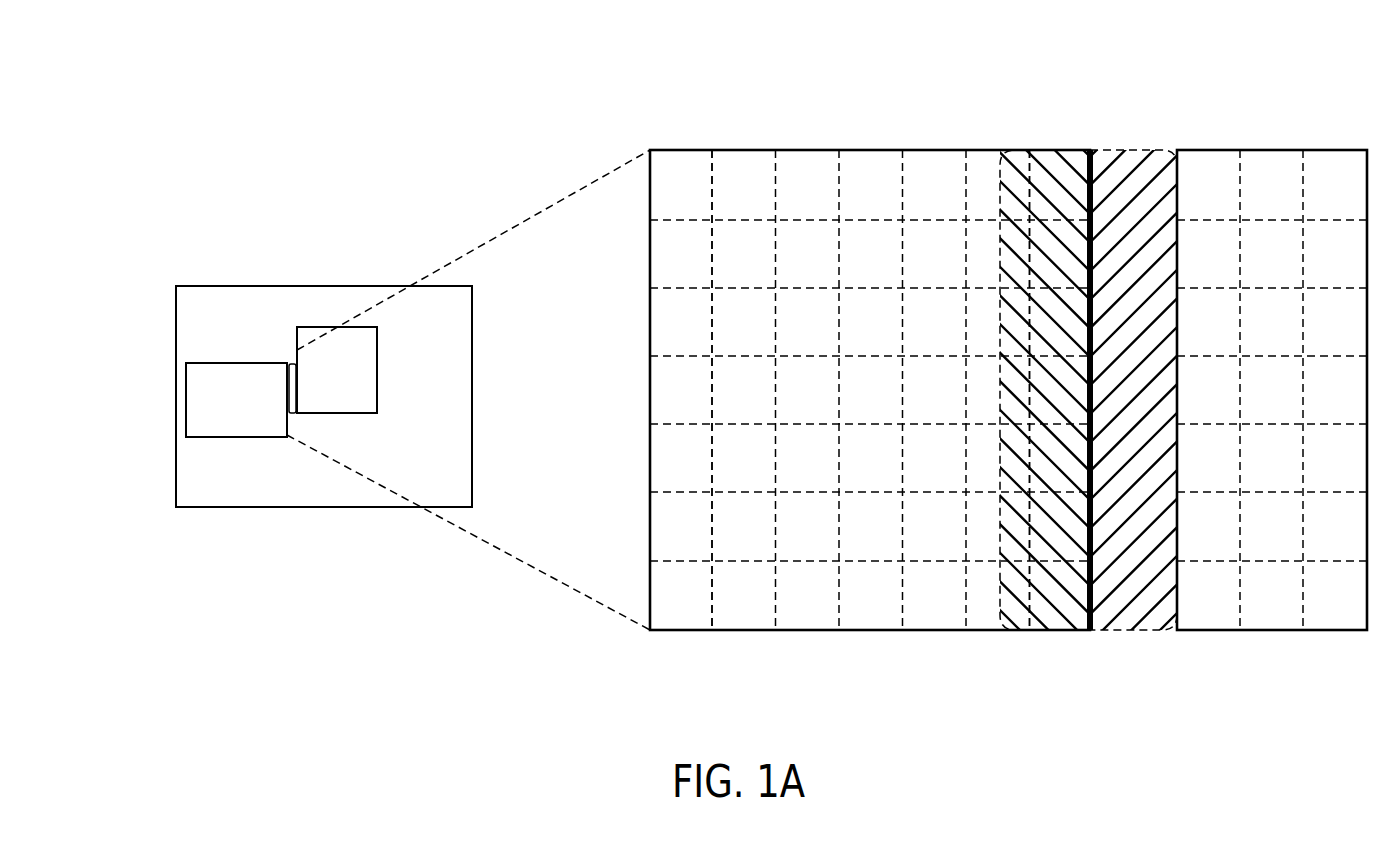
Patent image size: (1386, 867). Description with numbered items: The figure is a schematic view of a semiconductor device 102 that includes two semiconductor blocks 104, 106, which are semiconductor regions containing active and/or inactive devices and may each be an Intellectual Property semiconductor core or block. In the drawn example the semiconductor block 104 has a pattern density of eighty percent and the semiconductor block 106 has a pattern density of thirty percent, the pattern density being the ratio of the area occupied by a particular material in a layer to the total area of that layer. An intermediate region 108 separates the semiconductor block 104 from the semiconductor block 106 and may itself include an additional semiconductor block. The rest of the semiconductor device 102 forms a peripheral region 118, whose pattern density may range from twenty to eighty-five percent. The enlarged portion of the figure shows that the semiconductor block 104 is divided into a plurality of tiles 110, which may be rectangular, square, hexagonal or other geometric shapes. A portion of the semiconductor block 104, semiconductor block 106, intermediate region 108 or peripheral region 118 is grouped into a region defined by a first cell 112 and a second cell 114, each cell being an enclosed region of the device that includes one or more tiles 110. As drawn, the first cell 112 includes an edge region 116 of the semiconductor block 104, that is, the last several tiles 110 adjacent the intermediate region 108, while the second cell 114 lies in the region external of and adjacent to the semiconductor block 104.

The semiconductor device 102 is at (176, 383).
The semiconductor block 104 is at (253, 432).
The semiconductor block 106 is at (375, 370).
The intermediate region 108 is at (292, 362).
The tiles 110 is at (682, 608).
The first cell 112 is at (1005, 625).
The second cell 114 is at (1160, 628).
The edge region 116 is at (1093, 630).
The peripheral region 118 is at (203, 502).